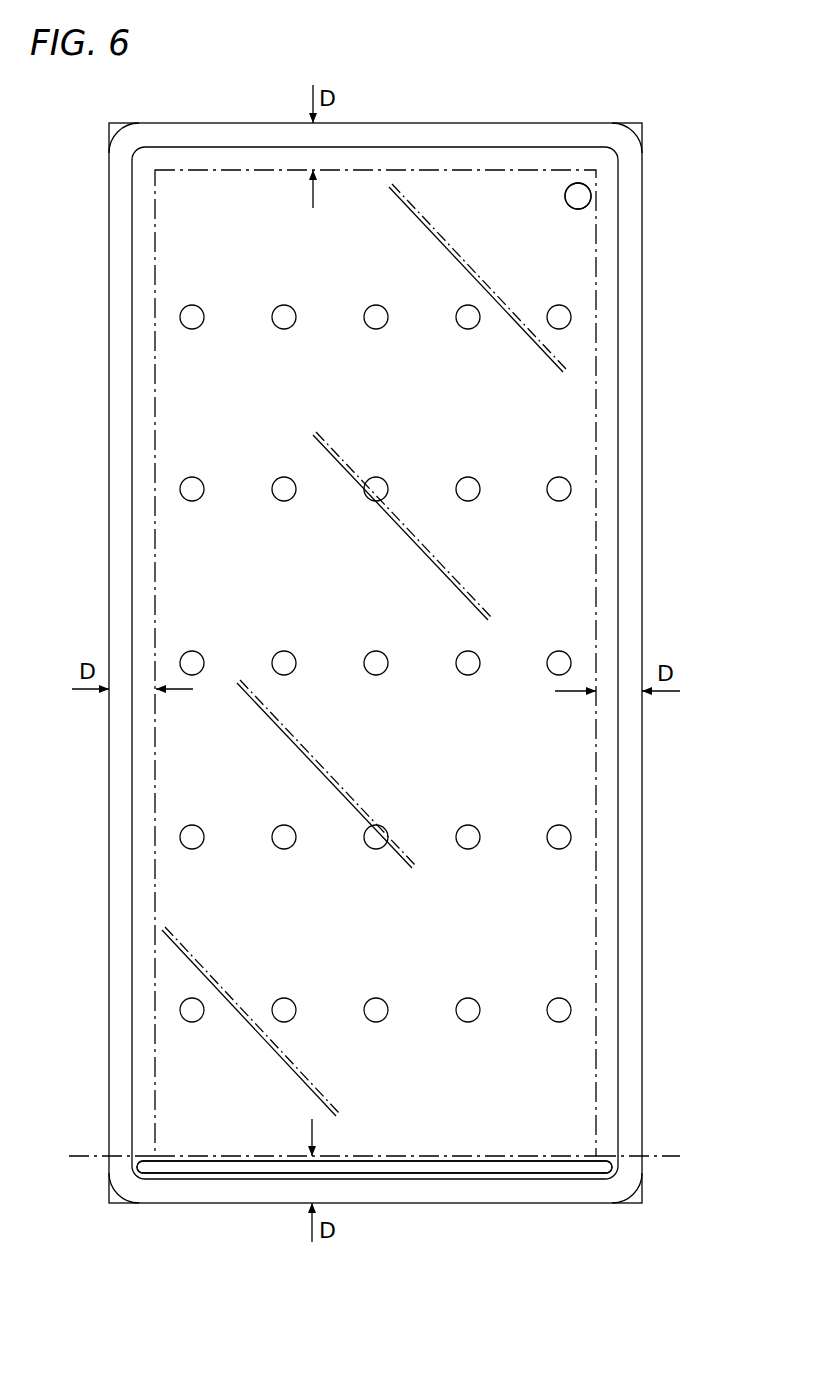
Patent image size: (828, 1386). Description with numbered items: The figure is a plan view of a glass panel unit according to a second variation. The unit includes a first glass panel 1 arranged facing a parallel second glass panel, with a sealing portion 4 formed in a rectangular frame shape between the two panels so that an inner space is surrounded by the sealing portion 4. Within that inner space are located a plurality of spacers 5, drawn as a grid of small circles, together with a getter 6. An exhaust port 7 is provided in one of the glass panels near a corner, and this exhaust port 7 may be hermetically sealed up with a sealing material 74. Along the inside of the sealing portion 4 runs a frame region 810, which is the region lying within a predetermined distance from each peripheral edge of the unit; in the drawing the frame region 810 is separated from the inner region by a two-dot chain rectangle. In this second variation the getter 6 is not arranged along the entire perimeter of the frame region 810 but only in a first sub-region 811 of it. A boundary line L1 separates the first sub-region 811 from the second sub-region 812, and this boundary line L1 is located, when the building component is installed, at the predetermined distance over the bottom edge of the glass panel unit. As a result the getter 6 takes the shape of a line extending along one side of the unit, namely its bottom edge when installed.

The first glass panel 1 is at (167, 1074).
The sealing portion 4 is at (233, 131).
The spacers 5 is at (194, 829).
The getter 6 is at (271, 1168).
The exhaust port 7 is at (572, 203).
The sealing material 74 is at (565, 194).
The frame region 810 is at (607, 791).
The first sub-region 811 is at (199, 1168).
The second sub-region 812 is at (142, 895).
The boundary line L1 is at (389, 1161).